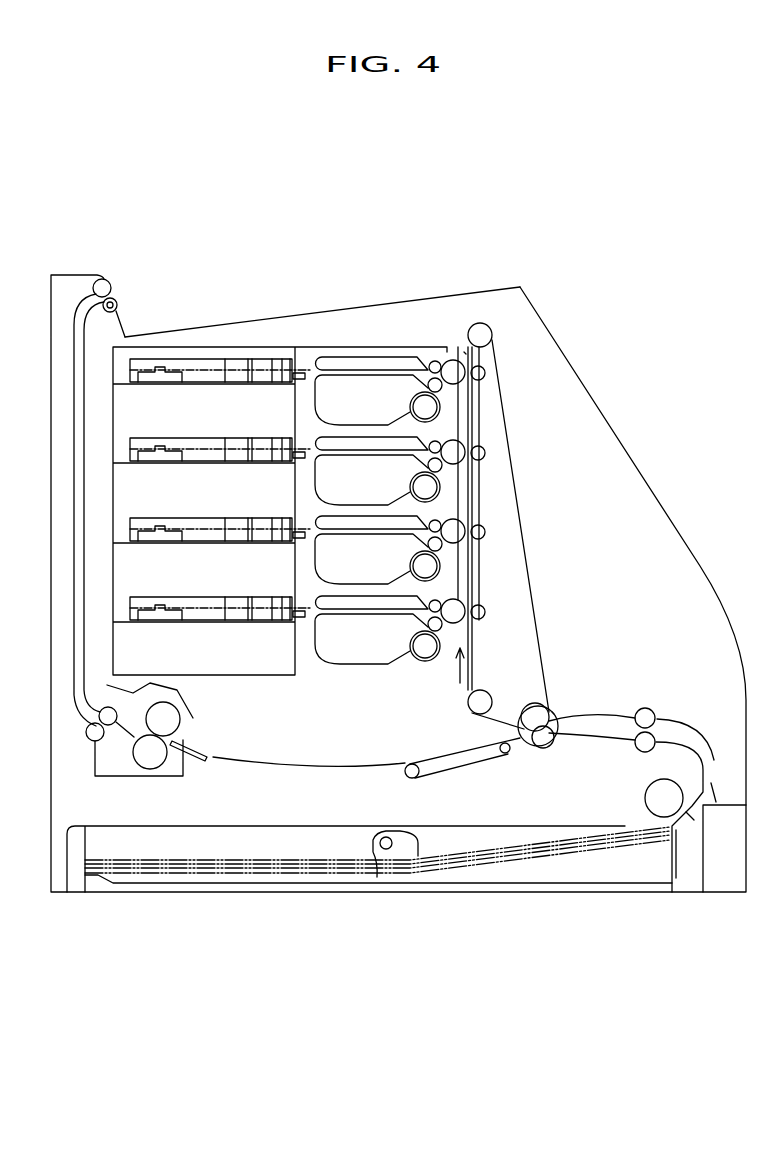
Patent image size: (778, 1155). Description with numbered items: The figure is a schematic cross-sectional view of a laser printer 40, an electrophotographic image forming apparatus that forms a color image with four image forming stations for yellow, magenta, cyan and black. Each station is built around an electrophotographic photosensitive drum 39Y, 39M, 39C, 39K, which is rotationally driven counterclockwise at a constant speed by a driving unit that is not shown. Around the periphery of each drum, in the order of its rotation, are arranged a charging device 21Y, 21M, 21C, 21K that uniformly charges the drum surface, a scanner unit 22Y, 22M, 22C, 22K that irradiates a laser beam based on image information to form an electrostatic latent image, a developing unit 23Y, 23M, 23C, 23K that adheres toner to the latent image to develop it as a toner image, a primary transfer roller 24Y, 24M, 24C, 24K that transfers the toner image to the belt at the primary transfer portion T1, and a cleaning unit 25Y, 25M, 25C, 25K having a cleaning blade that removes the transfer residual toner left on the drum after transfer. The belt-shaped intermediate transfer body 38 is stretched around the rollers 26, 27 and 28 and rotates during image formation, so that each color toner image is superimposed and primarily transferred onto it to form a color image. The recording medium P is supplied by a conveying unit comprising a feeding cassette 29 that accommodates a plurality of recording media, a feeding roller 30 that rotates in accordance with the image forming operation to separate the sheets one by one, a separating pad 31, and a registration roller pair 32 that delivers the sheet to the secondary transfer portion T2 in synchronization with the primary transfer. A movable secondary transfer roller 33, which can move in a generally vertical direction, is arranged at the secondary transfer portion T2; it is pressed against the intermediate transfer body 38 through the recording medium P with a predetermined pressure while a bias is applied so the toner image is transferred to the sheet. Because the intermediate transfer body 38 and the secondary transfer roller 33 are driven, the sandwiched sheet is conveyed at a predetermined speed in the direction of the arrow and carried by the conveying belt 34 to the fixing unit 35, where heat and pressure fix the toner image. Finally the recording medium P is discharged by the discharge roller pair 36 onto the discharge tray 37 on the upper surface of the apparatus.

The laser printer 40 is at (393, 960).
The discharge tray 37 is at (293, 316).
The discharge roller pair 36 is at (116, 298).
The fixing unit 35 is at (137, 778).
The scanner unit 22K is at (125, 380).
The scanner unit 22C is at (125, 460).
The scanner unit 22M is at (125, 540).
The scanner unit 22Y is at (125, 620).
The developing unit 23K is at (314, 398).
The developing unit 23C is at (314, 478).
The developing unit 23M is at (314, 557).
The developing unit 23Y is at (314, 637).
The cleaning unit 25K is at (347, 355).
The cleaning unit 25C is at (325, 437).
The cleaning unit 25M is at (325, 516).
The cleaning unit 25Y is at (325, 596).
The charging device 21K is at (442, 362).
The charging device 21C is at (462, 447).
The charging device 21M is at (462, 526).
The charging device 21Y is at (462, 605).
The photosensitive drum 39K is at (446, 361).
The photosensitive drum 39C is at (446, 441).
The photosensitive drum 39M is at (446, 521).
The photosensitive drum 39Y is at (446, 606).
The primary transfer roller 24K is at (486, 374).
The primary transfer roller 24C is at (486, 454).
The primary transfer roller 24M is at (486, 533).
The primary transfer roller 24Y is at (486, 612).
The intermediate transfer body 38 is at (470, 660).
The roller 26 is at (484, 322).
The roller 28 is at (468, 704).
The roller 27 is at (528, 708).
The secondary transfer roller 33 is at (546, 750).
The primary transfer portion T1 is at (462, 352).
The secondary transfer portion T2 is at (554, 711).
The conveying belt 34 is at (410, 764).
The registration roller pair 32 is at (650, 708).
The feeding roller 30 is at (645, 797).
The separating pad 31 is at (678, 880).
The feeding cassette 29 is at (542, 895).
The recording medium P is at (344, 877).